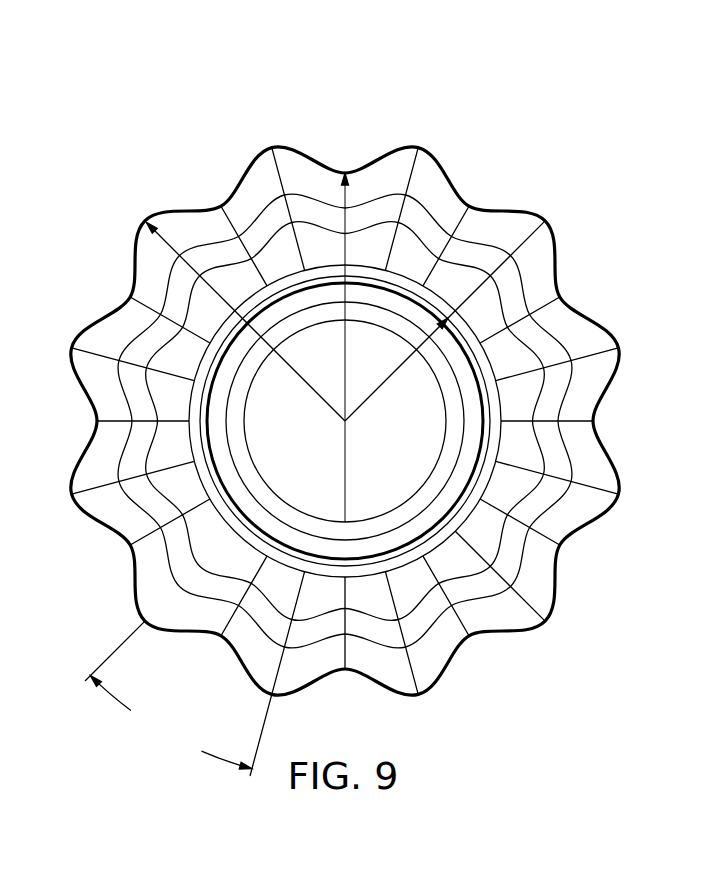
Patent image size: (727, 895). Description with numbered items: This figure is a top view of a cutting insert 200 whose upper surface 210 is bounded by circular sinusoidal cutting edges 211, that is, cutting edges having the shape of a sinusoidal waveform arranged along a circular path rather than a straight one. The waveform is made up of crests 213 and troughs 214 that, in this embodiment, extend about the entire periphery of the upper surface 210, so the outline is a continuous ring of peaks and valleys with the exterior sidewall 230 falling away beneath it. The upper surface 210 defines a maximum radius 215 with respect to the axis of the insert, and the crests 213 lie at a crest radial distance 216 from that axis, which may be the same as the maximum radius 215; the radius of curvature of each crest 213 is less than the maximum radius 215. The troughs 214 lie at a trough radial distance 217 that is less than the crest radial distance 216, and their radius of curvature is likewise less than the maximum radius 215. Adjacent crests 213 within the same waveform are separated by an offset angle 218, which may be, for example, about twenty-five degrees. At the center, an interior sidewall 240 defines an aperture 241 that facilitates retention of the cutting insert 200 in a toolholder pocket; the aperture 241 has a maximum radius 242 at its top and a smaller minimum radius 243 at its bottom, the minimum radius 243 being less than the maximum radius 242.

The cutting insert 200 is at (105, 120).
The circular sinusoidal cutting edges 211 is at (438, 112).
The upper surface 210 is at (440, 176).
The exterior sidewall 230 is at (567, 298).
The crests 213 is at (262, 143).
The troughs 214 is at (132, 302).
The maximum radius 215 is at (173, 247).
The crest radial distance 216 is at (227, 277).
The trough radial distance 217 is at (350, 200).
The offset angle 218 is at (178, 698).
The interior sidewall 240 is at (448, 404).
The aperture 241 is at (438, 462).
The maximum radius 242 is at (372, 390).
The minimum radius 243 is at (345, 462).